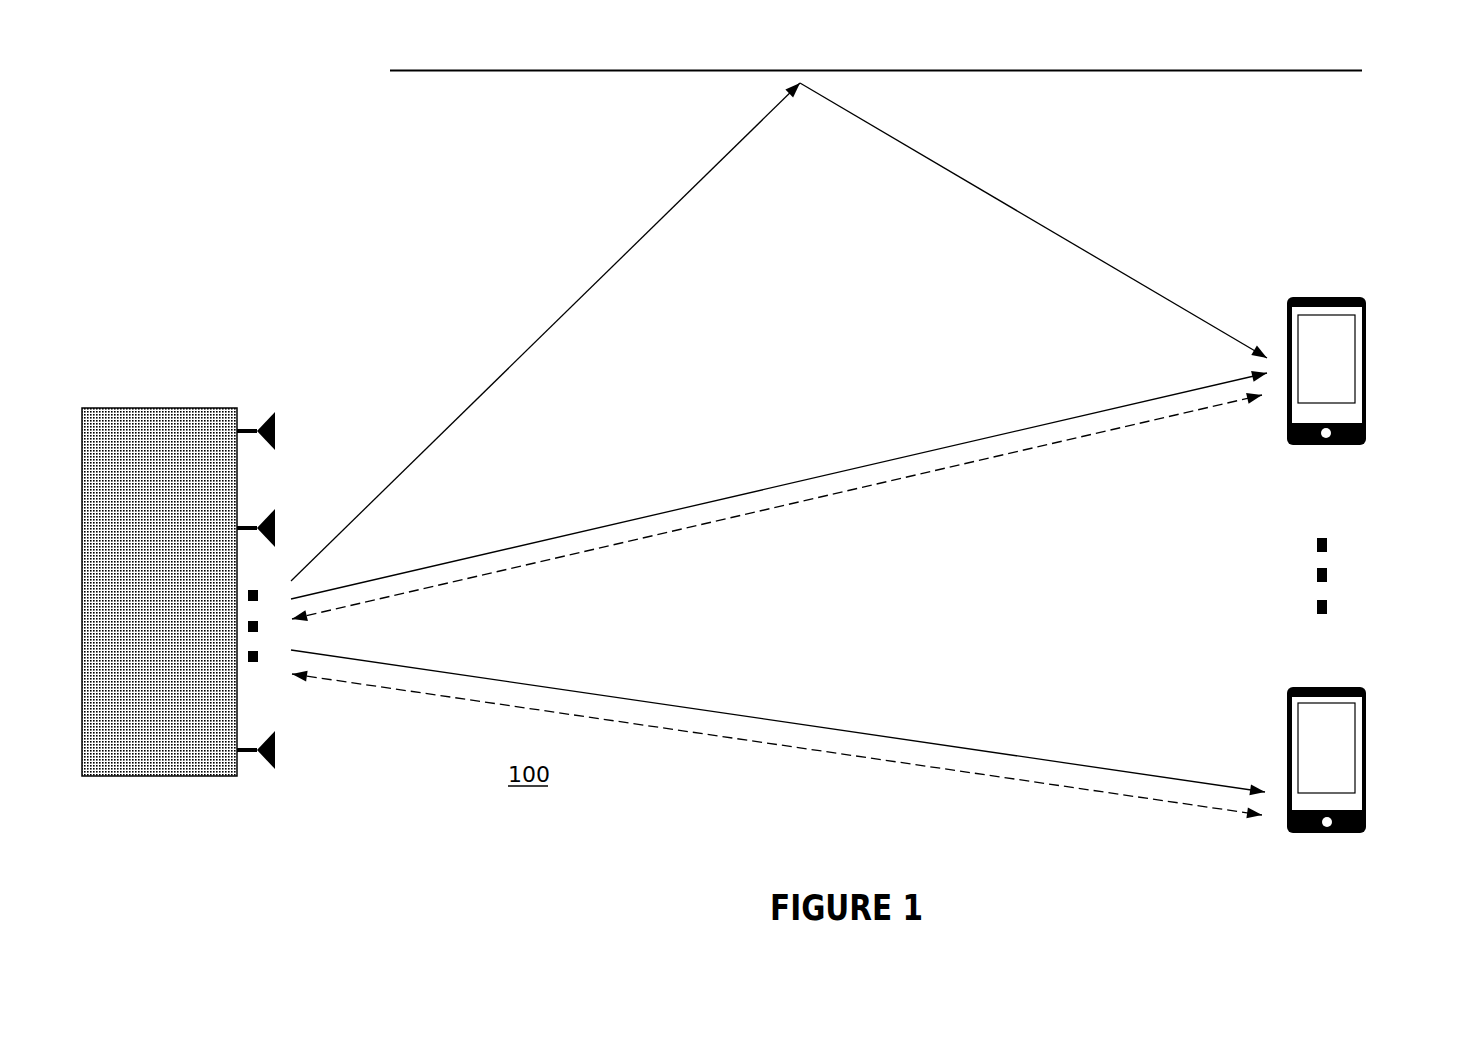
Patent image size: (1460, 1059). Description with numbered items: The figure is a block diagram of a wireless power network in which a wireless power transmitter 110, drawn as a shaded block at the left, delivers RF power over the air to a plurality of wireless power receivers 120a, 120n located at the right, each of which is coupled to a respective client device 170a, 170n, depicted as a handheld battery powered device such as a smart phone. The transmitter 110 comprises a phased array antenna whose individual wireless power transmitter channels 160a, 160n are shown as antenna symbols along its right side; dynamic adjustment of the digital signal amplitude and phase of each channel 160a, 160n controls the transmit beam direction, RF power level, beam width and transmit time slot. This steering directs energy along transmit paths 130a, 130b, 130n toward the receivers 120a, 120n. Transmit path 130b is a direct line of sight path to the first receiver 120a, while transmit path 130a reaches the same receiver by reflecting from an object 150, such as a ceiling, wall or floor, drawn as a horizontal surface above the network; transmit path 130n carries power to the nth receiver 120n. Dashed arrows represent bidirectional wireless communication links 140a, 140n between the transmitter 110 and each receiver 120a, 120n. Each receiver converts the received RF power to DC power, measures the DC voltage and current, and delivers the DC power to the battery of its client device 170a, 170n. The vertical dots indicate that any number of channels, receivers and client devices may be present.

The wireless power transmitter 110 is at (168, 406).
The wireless power receiver 120a is at (1357, 335).
The wireless power receiver 120n is at (1357, 725).
The transmit path 130a is at (940, 165).
The transmit path 130b is at (917, 455).
The transmit path 130n is at (898, 740).
The bidirectional wireless communication link 140a is at (902, 480).
The bidirectional wireless communication link 140n is at (892, 765).
The reflection object 150 is at (1265, 68).
The wireless power transmitter channel 160a is at (270, 410).
The wireless power transmitter channel 160n is at (270, 770).
The client device 170a is at (1369, 339).
The client device 170n is at (1373, 729).